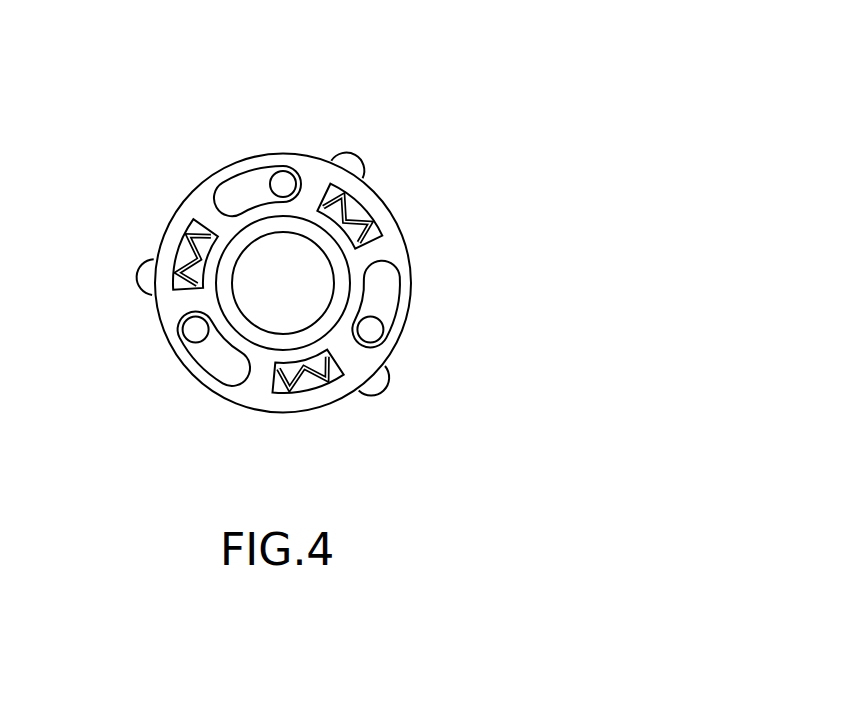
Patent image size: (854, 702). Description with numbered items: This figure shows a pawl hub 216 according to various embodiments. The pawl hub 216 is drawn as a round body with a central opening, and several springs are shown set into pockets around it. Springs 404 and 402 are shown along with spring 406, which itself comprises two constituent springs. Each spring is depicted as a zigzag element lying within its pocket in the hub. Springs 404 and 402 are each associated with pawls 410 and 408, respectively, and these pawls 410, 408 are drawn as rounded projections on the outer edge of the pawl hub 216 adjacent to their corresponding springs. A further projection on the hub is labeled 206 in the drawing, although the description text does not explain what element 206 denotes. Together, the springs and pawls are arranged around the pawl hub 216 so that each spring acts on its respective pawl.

The pawl hub 216 is at (437, 122).
The protrusion 206 is at (348, 154).
The spring 402 is at (313, 390).
The spring 404 is at (164, 286).
The spring 406 is at (366, 218).
The pawl 408 is at (389, 381).
The pawl 410 is at (137, 270).